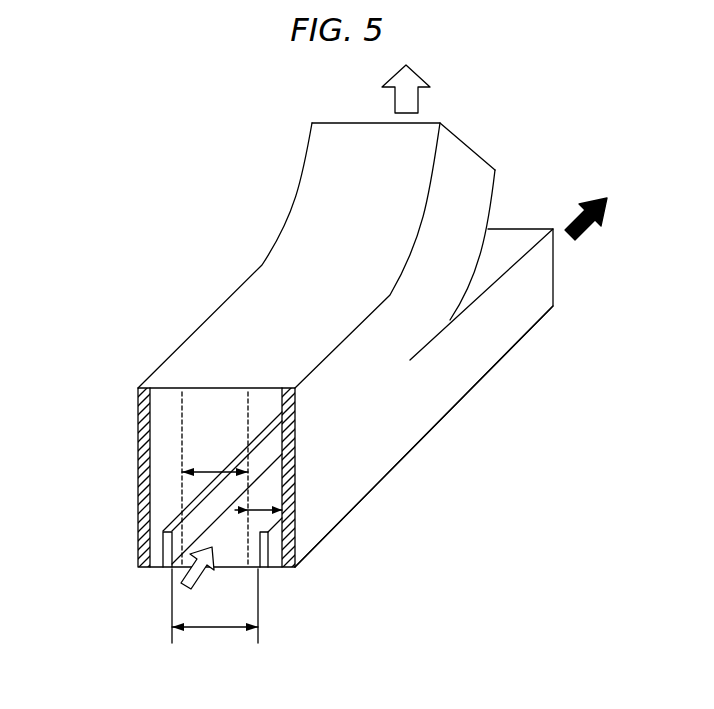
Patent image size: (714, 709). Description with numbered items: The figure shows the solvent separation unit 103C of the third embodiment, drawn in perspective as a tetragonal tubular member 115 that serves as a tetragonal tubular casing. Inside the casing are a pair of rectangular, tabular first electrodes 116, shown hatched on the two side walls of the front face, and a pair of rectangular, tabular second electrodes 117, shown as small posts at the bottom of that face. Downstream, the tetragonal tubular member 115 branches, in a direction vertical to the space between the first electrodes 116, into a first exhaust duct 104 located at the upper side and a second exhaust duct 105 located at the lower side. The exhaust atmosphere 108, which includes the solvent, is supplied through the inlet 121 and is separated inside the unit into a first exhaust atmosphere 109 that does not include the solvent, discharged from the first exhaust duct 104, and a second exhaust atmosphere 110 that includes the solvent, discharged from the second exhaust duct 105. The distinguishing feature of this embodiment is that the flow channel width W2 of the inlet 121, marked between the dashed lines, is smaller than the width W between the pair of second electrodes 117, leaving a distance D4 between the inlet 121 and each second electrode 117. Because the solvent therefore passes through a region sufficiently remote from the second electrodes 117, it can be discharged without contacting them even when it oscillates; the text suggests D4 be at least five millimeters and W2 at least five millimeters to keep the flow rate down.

The solvent separation unit 103C is at (174, 237).
The first exhaust duct 104 is at (298, 188).
The second exhaust duct 105 is at (510, 330).
The exhaust atmosphere 108 is at (212, 574).
The first exhaust atmosphere 109 is at (418, 97).
The second exhaust atmosphere 110 is at (588, 238).
The tetragonal tubular member 115 is at (423, 437).
The first electrodes 116 is at (138, 480).
The second electrodes 117 is at (168, 568).
The inlet 121 is at (191, 410).
The width between the second electrodes W is at (211, 628).
The flow channel width of the inlet W2 is at (212, 470).
The distance between the inlet and the second electrodes D4 is at (254, 510).